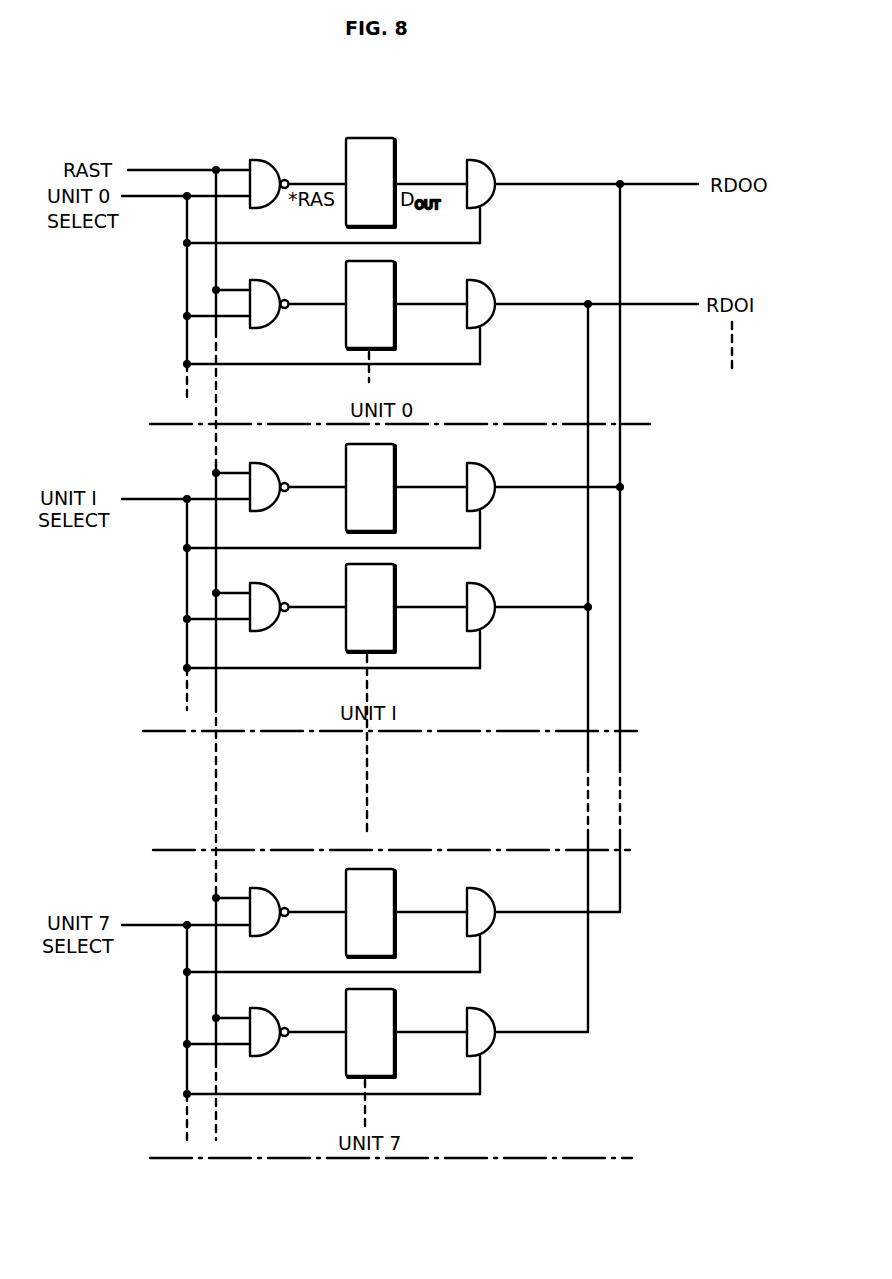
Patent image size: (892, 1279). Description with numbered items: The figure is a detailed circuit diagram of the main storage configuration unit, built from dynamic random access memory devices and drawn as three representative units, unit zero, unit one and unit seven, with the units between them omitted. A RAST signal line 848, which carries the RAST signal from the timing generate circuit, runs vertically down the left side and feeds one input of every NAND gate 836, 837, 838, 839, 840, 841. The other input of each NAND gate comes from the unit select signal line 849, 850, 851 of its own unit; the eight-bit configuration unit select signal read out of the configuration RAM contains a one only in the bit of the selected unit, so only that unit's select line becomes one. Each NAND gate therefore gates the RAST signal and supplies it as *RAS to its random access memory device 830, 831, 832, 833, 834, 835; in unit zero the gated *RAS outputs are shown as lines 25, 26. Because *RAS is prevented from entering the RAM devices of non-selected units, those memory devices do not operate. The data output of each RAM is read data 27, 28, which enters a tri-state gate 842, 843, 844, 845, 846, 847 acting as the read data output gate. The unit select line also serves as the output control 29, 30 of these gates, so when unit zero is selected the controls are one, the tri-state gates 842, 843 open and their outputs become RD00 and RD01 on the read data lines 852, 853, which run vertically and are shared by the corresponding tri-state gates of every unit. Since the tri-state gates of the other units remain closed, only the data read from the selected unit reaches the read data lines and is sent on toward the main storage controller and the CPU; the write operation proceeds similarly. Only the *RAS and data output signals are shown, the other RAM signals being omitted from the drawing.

The RAS signal line from NAND gate 836 25 is at (320, 180).
The RAS signal line from NAND gate 837 26 is at (308, 302).
The read data 27 is at (436, 182).
The read data 28 is at (426, 302).
The output control 29 is at (482, 233).
The output control 30 is at (483, 350).
The random access memory device 830 is at (377, 138).
The random access memory device 831 is at (346, 330).
The random access memory device 832 is at (396, 468).
The random access memory device 833 is at (397, 588).
The random access memory device 834 is at (393, 890).
The random access memory device 835 is at (393, 1012).
The NAND gate 836 is at (270, 158).
The NAND gate 837 is at (270, 280).
The NAND gate 838 is at (265, 463).
The NAND gate 839 is at (267, 594).
The NAND gate 840 is at (268, 888).
The NAND gate 841 is at (268, 1008).
The tri-state gate 842 is at (493, 171).
The tri-state gate 843 is at (495, 291).
The tri-state gate 844 is at (492, 475).
The tri-state gate 845 is at (493, 596).
The tri-state gate 846 is at (491, 900).
The tri-state gate 847 is at (491, 1020).
The RAST signal line 848 is at (172, 168).
The unit select signal line 849 is at (165, 200).
The unit select signal line 850 is at (165, 500).
The unit select signal line 851 is at (165, 926).
The read data line 852 is at (655, 184).
The read data line 853 is at (660, 304).